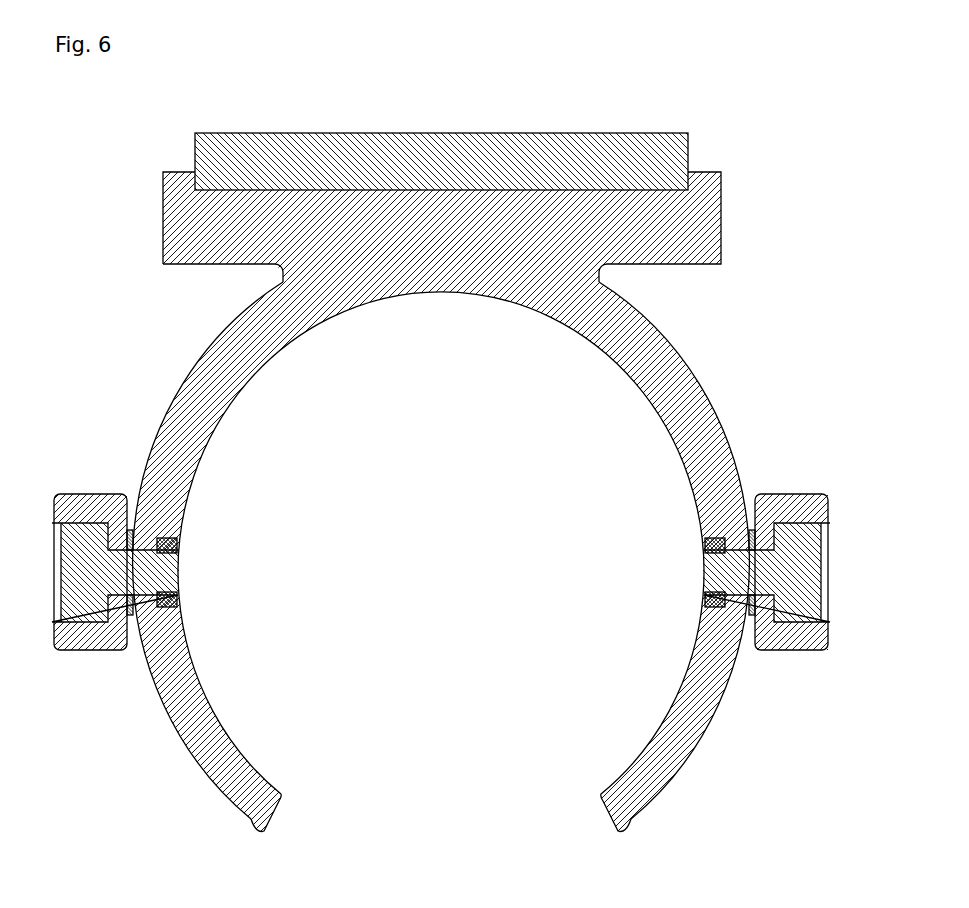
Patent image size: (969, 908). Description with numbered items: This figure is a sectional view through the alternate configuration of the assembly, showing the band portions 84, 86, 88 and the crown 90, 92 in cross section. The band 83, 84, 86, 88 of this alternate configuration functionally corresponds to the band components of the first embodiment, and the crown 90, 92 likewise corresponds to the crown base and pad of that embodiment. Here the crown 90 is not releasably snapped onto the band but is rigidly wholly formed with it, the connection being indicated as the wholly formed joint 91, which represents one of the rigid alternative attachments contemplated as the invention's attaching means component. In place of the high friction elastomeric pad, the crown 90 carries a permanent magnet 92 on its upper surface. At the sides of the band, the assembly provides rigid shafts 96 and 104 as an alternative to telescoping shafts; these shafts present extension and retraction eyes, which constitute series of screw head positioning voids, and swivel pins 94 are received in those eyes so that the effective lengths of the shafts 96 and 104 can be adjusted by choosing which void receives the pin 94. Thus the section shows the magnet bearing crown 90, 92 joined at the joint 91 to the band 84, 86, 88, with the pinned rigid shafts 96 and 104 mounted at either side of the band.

The band 84 is at (187, 742).
The band 86 is at (655, 360).
The band 88 is at (449, 568).
The crown 90 is at (667, 223).
The wholly formed joint 91 is at (392, 263).
The permanent magnet 92 is at (485, 148).
The swivel pin 94 is at (75, 562).
The rigid shaft 96 is at (85, 640).
The rigid shaft 104 is at (782, 505).